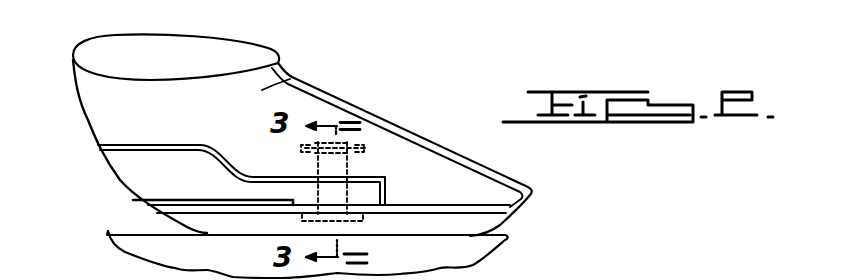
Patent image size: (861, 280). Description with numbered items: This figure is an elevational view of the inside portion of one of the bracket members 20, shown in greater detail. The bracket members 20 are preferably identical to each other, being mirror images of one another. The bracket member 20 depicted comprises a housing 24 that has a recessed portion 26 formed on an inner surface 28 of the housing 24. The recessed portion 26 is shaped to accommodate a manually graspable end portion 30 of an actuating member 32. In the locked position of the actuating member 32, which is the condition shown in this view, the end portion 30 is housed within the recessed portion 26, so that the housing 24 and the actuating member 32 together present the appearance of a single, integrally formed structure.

The bracket member 20 is at (425, 139).
The housing 24 is at (266, 89).
The recessed portion 26 is at (98, 146).
The inner surface 28 is at (143, 92).
The manually graspable end portion 30 is at (128, 168).
The actuating member 32 is at (162, 182).